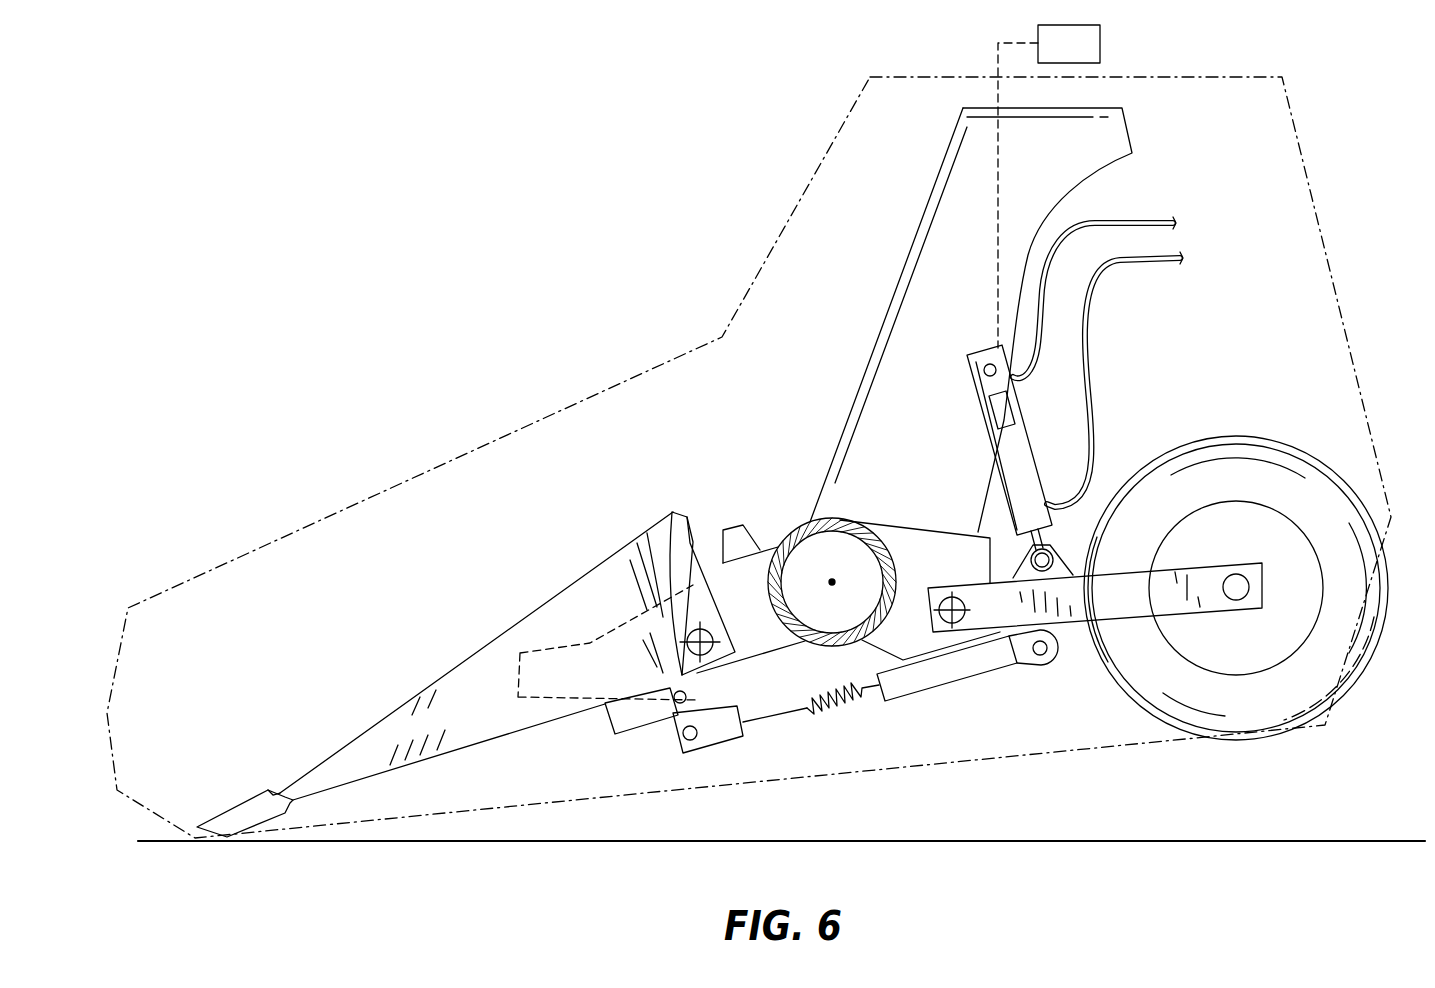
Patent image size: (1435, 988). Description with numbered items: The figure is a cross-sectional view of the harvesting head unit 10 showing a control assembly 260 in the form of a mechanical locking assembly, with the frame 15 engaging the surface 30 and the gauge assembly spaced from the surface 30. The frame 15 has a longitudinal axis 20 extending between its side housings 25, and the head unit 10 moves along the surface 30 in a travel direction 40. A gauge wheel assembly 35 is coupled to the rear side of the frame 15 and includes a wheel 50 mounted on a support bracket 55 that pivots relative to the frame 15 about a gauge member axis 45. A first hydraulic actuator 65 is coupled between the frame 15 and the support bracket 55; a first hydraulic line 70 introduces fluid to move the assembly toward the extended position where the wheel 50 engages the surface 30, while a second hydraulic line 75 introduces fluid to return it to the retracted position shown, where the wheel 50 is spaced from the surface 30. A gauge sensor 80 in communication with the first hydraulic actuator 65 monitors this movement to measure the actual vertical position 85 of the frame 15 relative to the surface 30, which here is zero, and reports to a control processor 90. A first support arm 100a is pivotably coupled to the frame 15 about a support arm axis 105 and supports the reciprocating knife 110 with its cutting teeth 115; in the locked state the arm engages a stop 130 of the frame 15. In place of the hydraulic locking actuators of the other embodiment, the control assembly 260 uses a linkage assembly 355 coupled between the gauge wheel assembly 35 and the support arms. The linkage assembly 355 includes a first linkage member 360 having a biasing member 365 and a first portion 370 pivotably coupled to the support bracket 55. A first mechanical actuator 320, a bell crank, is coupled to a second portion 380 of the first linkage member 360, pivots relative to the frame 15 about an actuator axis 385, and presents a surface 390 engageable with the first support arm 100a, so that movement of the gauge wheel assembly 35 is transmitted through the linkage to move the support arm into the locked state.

The harvesting head unit 10 is at (528, 310).
The frame 15 is at (882, 330).
The longitudinal axis 20 is at (832, 578).
The side housings 25 is at (792, 204).
The surface 30 is at (1312, 839).
The gauge wheel assembly 35 is at (1330, 375).
The travel direction 40 is at (243, 436).
The gauge member axis 45 is at (945, 624).
The wheel 50 is at (1244, 437).
The support bracket 55 is at (1130, 602).
The first hydraulic actuator 65 is at (1030, 463).
The first hydraulic line 70 is at (1150, 223).
The second hydraulic line 75 is at (1145, 264).
The gauge sensor 80 is at (1027, 410).
The actual vertical position 85 is at (128, 829).
The control processor 90 is at (1101, 42).
The first support arm 100a is at (392, 705).
The support arm axis 105 is at (681, 516).
The reciprocating knife 110 is at (230, 813).
The cutting teeth 115 is at (230, 778).
The stop 130 is at (742, 528).
The control assembly 260 is at (1285, 215).
The first mechanical actuator 320 is at (627, 718).
The linkage assembly 355 is at (722, 752).
The first linkage member 360 is at (764, 770).
The biasing member 365 is at (827, 712).
The first portion 370 is at (913, 702).
The second portion 380 is at (697, 755).
The actuator axis 385 is at (688, 632).
The surface 390 is at (606, 692).